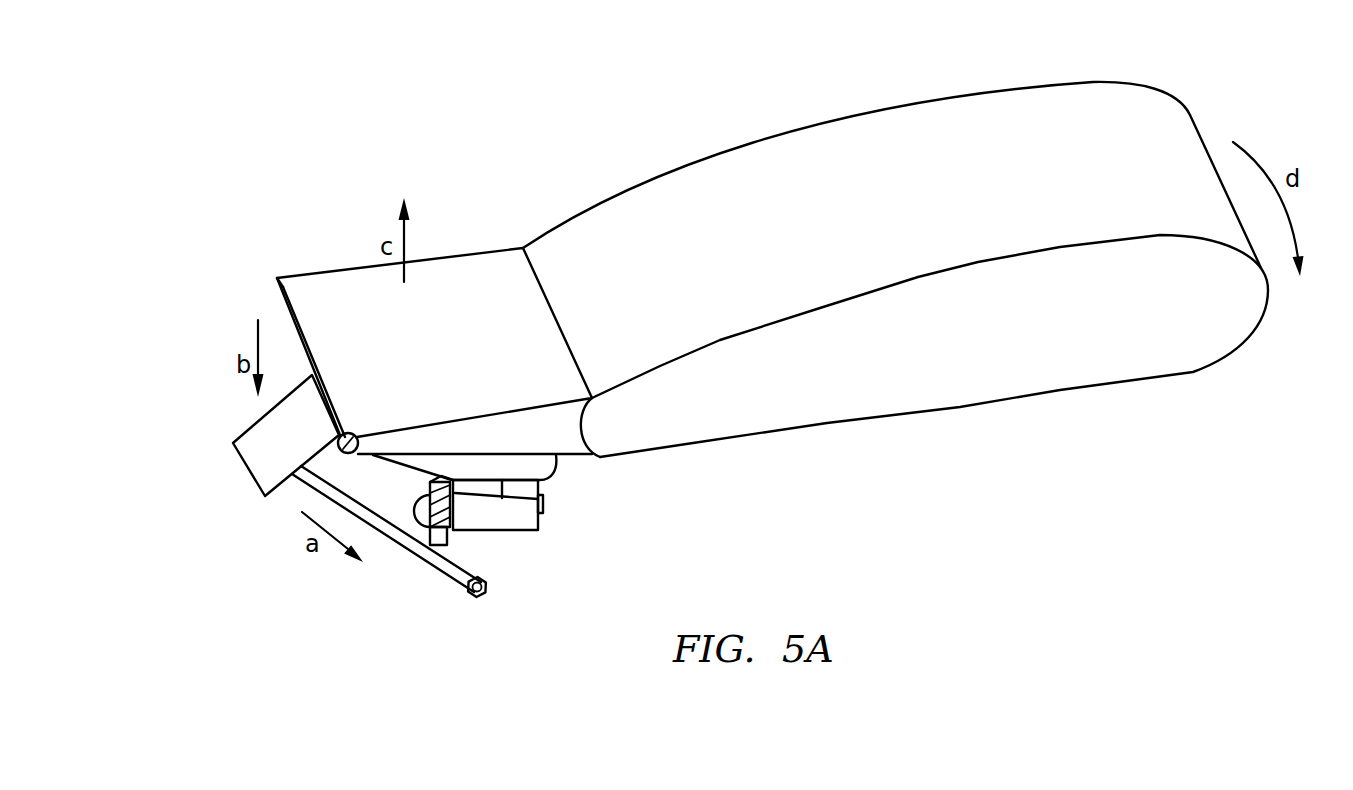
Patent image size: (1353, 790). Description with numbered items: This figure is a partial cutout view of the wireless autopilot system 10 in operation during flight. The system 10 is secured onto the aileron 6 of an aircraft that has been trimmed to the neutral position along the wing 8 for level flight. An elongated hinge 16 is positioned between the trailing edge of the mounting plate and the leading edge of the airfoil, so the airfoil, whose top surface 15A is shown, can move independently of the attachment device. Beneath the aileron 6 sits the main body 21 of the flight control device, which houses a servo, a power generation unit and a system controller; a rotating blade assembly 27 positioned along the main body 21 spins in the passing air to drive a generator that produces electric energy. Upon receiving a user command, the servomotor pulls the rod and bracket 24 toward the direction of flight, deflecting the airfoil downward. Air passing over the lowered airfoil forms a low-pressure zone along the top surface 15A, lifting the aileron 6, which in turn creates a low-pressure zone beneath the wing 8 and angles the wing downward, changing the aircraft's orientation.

The wireless autopilot system 10 is at (194, 299).
The aileron 6 is at (485, 309).
The wing 8 is at (922, 207).
The elongated hinge 16 is at (350, 434).
The top surface 15A is at (273, 460).
The rod and bracket 24 is at (413, 542).
The main body 21 is at (543, 468).
The rotating blade assembly 27 is at (448, 537).